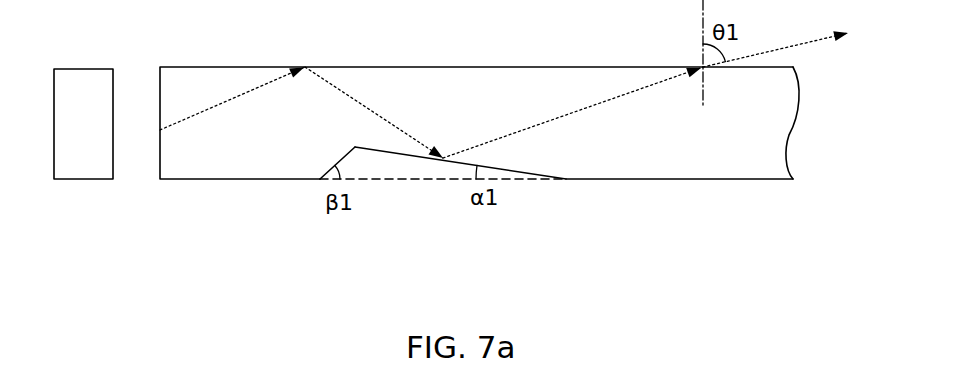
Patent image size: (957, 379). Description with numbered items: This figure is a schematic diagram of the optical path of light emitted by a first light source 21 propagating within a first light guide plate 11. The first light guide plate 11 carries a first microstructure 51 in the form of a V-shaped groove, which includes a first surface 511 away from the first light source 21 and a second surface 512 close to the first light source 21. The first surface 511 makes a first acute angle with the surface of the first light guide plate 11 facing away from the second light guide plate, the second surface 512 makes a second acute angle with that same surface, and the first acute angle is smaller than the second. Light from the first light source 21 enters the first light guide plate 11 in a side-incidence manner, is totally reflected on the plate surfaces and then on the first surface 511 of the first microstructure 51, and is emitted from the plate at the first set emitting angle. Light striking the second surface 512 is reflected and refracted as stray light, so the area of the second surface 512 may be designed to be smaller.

The first light source 21 is at (80, 159).
The first light guide plate 11 is at (640, 153).
The first microstructure 51 is at (443, 220).
The first surface 511 is at (398, 153).
The second surface 512 is at (347, 154).